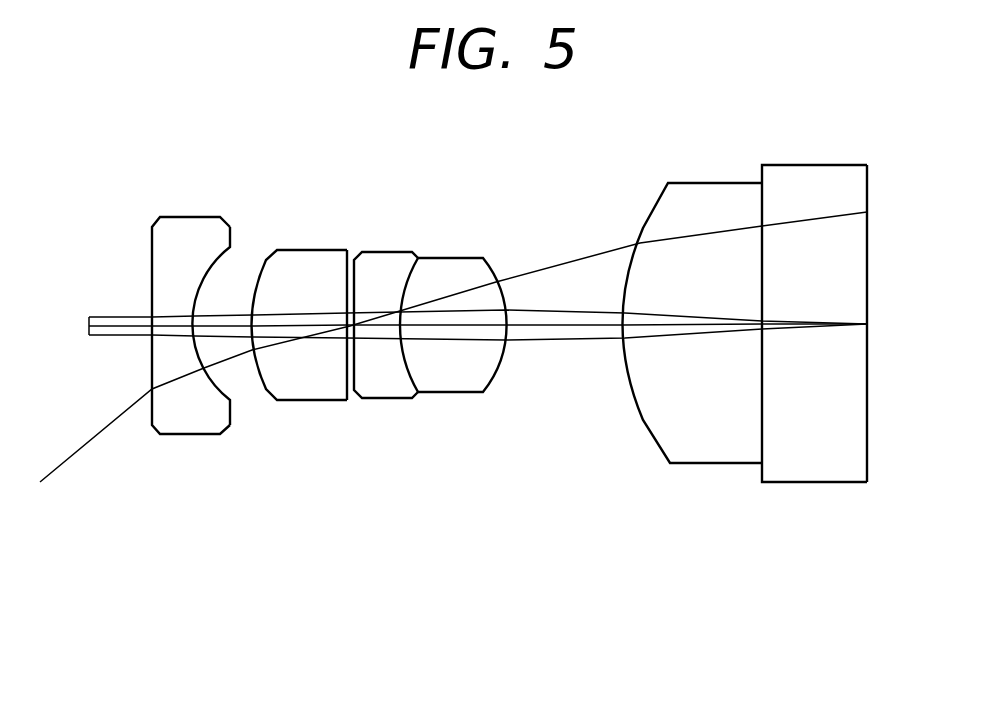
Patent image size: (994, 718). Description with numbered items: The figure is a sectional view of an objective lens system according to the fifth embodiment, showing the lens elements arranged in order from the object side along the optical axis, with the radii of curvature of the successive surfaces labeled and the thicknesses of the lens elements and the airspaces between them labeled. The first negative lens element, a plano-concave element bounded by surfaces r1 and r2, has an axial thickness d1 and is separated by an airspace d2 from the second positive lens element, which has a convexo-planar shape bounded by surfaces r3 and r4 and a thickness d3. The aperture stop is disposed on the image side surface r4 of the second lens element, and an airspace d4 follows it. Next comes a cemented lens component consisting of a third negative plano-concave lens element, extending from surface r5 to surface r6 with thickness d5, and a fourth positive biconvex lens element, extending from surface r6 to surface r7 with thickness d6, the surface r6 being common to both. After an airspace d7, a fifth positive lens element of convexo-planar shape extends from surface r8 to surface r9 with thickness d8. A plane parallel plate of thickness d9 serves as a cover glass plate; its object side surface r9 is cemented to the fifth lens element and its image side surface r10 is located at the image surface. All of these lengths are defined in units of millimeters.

The object side surface of first negative lens element r1 is at (152, 415).
The image side surface of first negative lens element r2 is at (221, 382).
The object side surface of second positive lens element r3 is at (265, 390).
The aperture stop r4 is at (340, 398).
The object side surface of third negative lens element r5 is at (357, 380).
The cemented surface between third and fourth lens elements r6 is at (408, 383).
The image side surface of fourth positive lens element r7 is at (493, 377).
The object side surface of fifth positive lens element r8 is at (643, 422).
The object side surface of cover glass plate r9 is at (762, 430).
The image side surface of cover glass plate r10 is at (867, 423).
The thickness of first lens element d1 is at (175, 323).
The airspace between first and second lens elements d2 is at (226, 323).
The thickness of second lens element d3 is at (307, 323).
The airspace between second and third lens elements d4 is at (348, 323).
The thickness of third lens element d5 is at (388, 323).
The thickness of fourth lens element d6 is at (450, 325).
The airspace between fourth and fifth lens elements d7 is at (560, 323).
The thickness of fifth lens element d8 is at (687, 323).
The thickness of plane parallel plate d9 is at (802, 323).